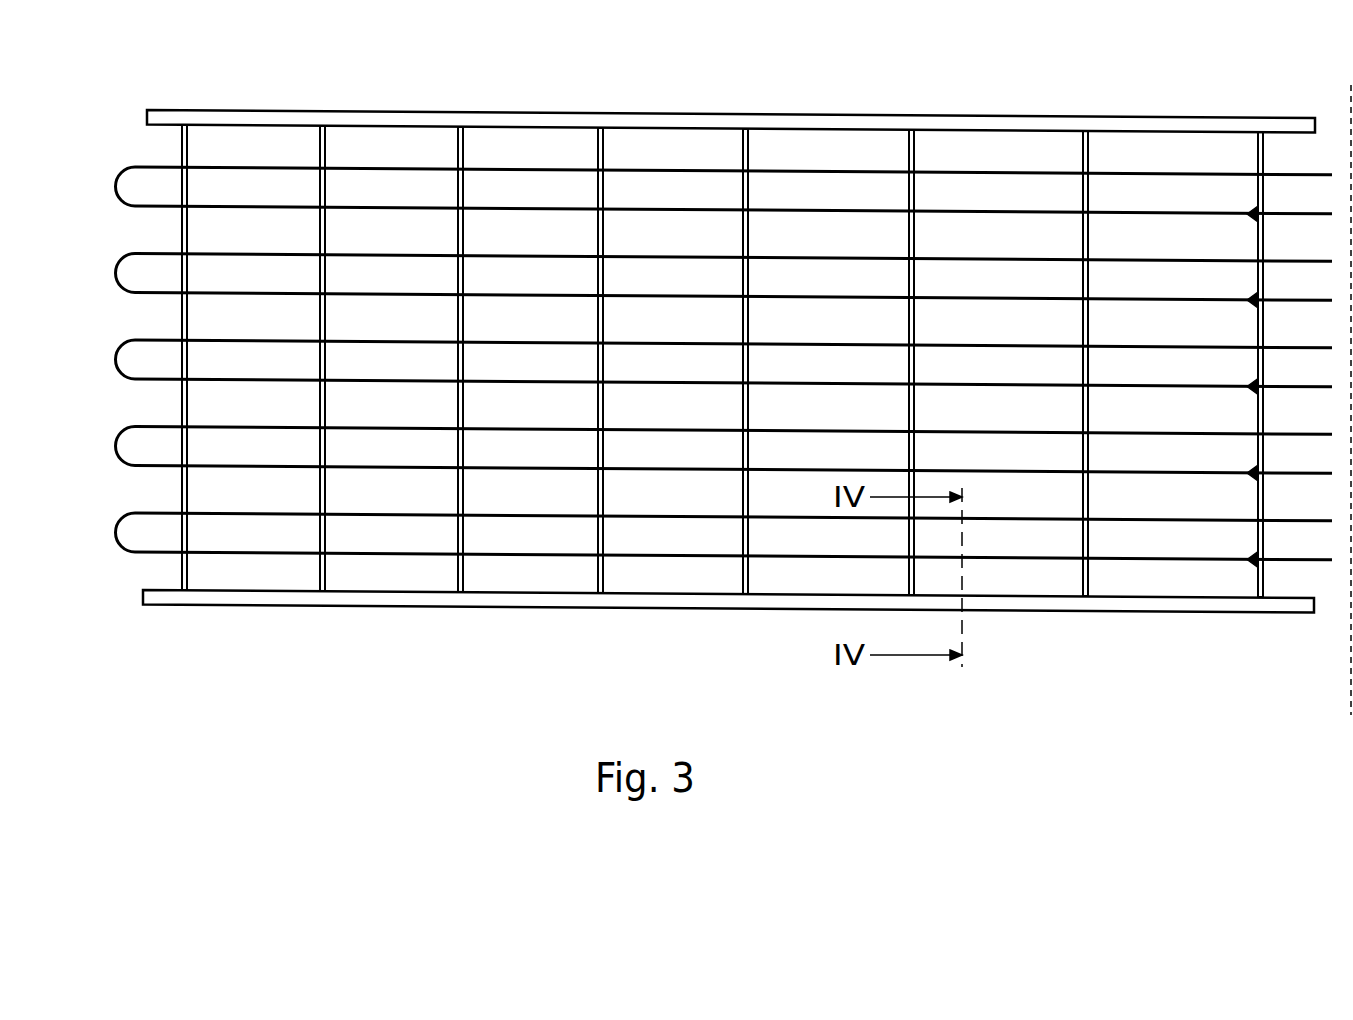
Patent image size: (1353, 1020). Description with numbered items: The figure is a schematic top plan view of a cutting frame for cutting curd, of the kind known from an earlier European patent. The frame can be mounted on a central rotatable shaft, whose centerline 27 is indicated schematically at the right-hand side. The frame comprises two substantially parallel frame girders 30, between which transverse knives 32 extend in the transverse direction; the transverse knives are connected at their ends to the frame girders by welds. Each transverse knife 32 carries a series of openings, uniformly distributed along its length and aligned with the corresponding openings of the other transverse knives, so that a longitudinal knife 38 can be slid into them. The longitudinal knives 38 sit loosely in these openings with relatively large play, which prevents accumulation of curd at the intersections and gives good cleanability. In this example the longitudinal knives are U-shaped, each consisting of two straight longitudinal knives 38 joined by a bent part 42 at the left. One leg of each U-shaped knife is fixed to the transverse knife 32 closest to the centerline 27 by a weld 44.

The centerline 27 is at (1350, 668).
The frame girder 30 is at (435, 112).
The transverse knife 32 is at (180, 148).
The longitudinal knife 38 is at (402, 168).
The bent part 42 is at (114, 186).
The weld 44 is at (1248, 220).